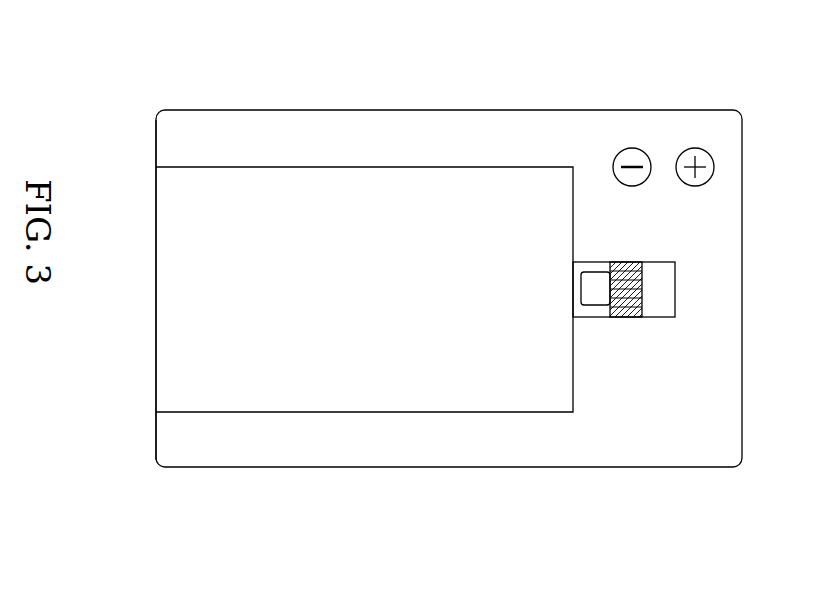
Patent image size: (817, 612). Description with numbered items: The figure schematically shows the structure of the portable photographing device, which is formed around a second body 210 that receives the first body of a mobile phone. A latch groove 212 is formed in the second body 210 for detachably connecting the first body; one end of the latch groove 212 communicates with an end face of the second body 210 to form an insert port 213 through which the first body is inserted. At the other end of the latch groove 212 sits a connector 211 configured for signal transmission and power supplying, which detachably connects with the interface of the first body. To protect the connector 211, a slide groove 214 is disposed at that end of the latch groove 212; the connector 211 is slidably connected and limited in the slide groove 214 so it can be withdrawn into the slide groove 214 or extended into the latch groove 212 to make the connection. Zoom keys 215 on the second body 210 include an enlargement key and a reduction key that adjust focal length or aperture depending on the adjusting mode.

The second body 210 is at (348, 135).
The connector 211 is at (600, 275).
The latch groove 212 is at (212, 212).
The insert port 213 is at (155, 230).
The slide groove 214 is at (663, 290).
The zoom keys 215 is at (643, 149).